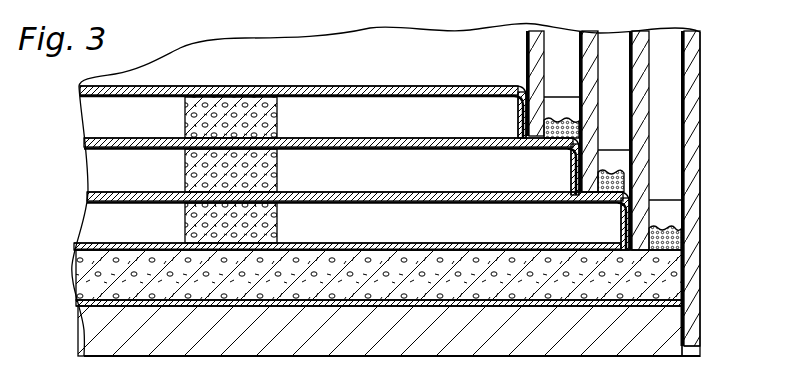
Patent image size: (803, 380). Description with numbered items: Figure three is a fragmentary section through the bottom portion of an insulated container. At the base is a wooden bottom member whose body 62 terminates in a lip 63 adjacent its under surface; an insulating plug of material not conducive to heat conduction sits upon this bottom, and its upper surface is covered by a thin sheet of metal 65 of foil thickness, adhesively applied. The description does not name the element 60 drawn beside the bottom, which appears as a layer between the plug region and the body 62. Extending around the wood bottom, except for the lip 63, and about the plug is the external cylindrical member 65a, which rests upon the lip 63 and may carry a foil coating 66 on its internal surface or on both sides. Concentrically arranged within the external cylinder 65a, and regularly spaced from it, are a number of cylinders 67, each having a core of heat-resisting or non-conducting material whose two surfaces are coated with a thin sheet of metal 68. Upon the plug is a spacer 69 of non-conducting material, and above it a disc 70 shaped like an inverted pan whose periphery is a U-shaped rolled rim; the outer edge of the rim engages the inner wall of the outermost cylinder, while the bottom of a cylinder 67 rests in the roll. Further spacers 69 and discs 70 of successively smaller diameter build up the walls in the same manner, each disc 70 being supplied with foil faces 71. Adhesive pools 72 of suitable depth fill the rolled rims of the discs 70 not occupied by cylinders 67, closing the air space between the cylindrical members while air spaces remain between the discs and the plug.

The concrete base layer 60 is at (688, 279).
The body 62 is at (673, 329).
The lip 63 is at (700, 350).
The thin sheet of metal 65 is at (88, 243).
The cylindrical member 65a is at (690, 170).
The foil coating 66 is at (680, 150).
The cylinders 67 is at (560, 26).
The thin sheet of metal 68 is at (630, 42).
The spacer 69 is at (278, 134).
The disc 70 is at (422, 92).
The foil faces 71 is at (480, 98).
The adhesive pools 72 is at (557, 117).